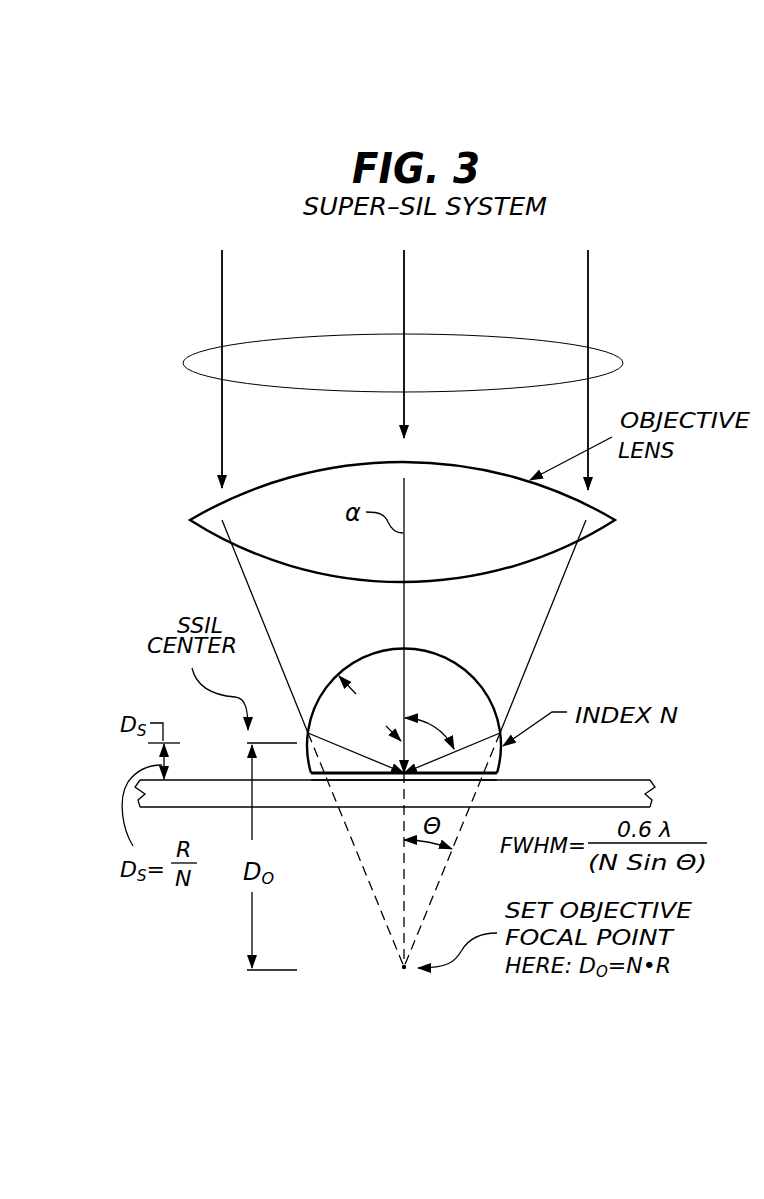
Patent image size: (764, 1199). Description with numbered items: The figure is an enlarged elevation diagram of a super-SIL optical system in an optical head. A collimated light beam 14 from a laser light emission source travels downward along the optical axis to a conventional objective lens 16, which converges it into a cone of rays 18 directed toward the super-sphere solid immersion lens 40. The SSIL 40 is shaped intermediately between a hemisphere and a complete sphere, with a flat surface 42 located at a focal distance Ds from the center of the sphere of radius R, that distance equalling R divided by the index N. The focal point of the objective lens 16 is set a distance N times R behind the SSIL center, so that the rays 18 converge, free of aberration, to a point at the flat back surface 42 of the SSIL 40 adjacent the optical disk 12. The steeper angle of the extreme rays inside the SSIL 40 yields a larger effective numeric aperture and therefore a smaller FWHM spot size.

The collimated light beam 14 is at (184, 362).
The objective lens 16 is at (194, 522).
The converging light cone 18 is at (556, 597).
The super-sphere solid immersion lens 40 is at (440, 652).
The flat surface 42 is at (350, 774).
The optical disk 12 is at (653, 790).